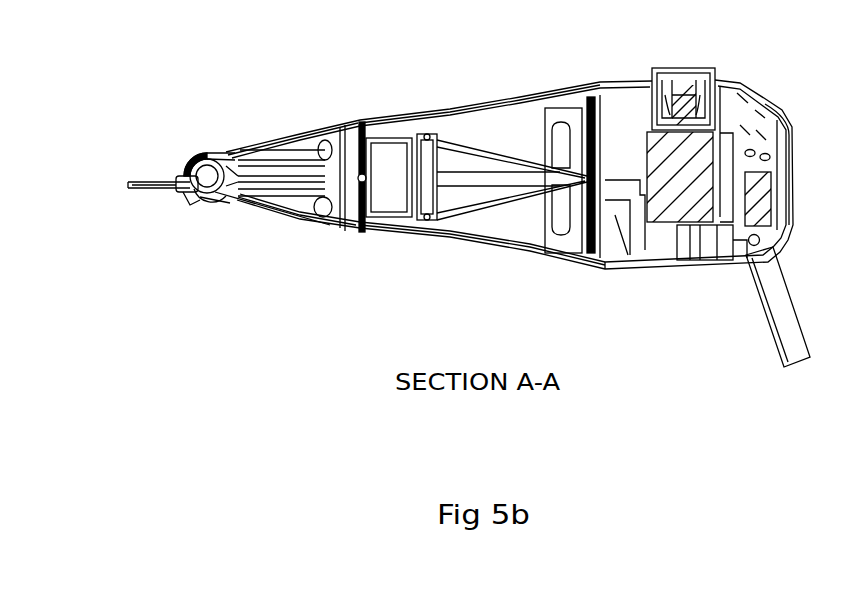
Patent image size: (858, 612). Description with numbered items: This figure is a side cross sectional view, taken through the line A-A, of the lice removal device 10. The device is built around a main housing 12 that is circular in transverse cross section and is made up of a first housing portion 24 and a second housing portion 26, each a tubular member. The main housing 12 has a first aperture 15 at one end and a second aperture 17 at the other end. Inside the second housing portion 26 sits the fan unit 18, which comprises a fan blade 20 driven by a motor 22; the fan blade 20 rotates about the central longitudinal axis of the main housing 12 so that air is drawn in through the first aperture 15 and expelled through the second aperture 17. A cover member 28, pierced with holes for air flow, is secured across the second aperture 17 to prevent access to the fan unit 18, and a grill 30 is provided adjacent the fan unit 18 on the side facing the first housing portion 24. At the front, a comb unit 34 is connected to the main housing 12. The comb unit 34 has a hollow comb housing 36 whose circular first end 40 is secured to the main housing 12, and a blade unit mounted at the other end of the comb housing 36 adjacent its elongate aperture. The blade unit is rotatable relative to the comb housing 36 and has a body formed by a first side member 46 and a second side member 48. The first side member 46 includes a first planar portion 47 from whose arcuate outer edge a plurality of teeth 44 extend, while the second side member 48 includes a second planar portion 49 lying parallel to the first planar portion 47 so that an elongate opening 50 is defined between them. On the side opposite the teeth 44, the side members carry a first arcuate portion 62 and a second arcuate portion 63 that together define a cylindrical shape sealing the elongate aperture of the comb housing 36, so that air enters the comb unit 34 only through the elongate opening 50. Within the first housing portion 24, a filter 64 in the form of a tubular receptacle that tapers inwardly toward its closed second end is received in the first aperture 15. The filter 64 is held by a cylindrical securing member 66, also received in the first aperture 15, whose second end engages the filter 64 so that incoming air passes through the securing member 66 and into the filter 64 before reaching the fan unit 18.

The lice removal device 10 is at (275, 338).
The main housing 12 is at (613, 72).
The first aperture 15 is at (339, 243).
The second aperture 17 is at (723, 123).
The fan unit 18 is at (681, 268).
The fan blade 20 is at (617, 123).
The motor 22 is at (744, 308).
The first housing portion 24 is at (512, 107).
The second housing portion 26 is at (633, 80).
The cover member 28 is at (773, 103).
The grill 30 is at (482, 273).
The comb unit 34 is at (300, 128).
The comb housing 36 is at (283, 212).
The first end 40 is at (338, 118).
The teeth 44 is at (120, 195).
The first side member 46 is at (177, 193).
The first planar portion 47 is at (183, 197).
The second side member 48 is at (178, 172).
The second planar portion 49 is at (186, 166).
The elongate opening 50 is at (182, 175).
The first arcuate portion 62 is at (212, 200).
The second arcuate portion 63 is at (210, 150).
The filter 64 is at (492, 150).
The securing member 66 is at (393, 127).